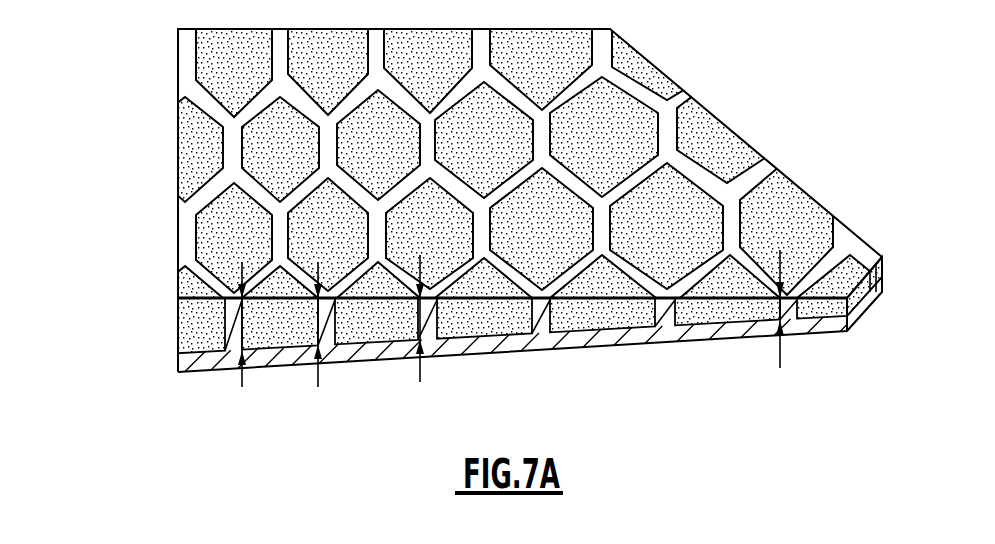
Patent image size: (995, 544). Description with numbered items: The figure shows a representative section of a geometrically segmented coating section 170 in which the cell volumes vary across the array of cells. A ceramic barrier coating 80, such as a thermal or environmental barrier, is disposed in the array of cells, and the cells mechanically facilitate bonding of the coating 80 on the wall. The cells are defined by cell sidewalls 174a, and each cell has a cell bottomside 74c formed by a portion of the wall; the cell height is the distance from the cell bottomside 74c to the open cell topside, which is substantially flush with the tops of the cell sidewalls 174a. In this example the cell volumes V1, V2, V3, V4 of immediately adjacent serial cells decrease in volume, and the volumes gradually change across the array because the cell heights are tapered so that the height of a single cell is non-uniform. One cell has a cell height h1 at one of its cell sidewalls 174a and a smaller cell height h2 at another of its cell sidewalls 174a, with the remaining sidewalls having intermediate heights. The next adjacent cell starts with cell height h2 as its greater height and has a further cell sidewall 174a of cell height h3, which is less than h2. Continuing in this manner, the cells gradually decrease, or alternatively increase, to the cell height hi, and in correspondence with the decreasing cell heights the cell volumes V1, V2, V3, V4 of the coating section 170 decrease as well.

The coating section 170 is at (447, 230).
The coating 80 is at (186, 318).
The cell volume V1 is at (331, 250).
The cell volume V2 is at (437, 254).
The cell volume V3 is at (545, 243).
The cell volume V4 is at (702, 234).
The cell height h1 is at (242, 383).
The cell height h2 is at (318, 382).
The cell height h3 is at (420, 377).
The cell height hi is at (780, 353).
The cell sidewall 174a is at (440, 318).
The cell bottomside 74c is at (593, 327).